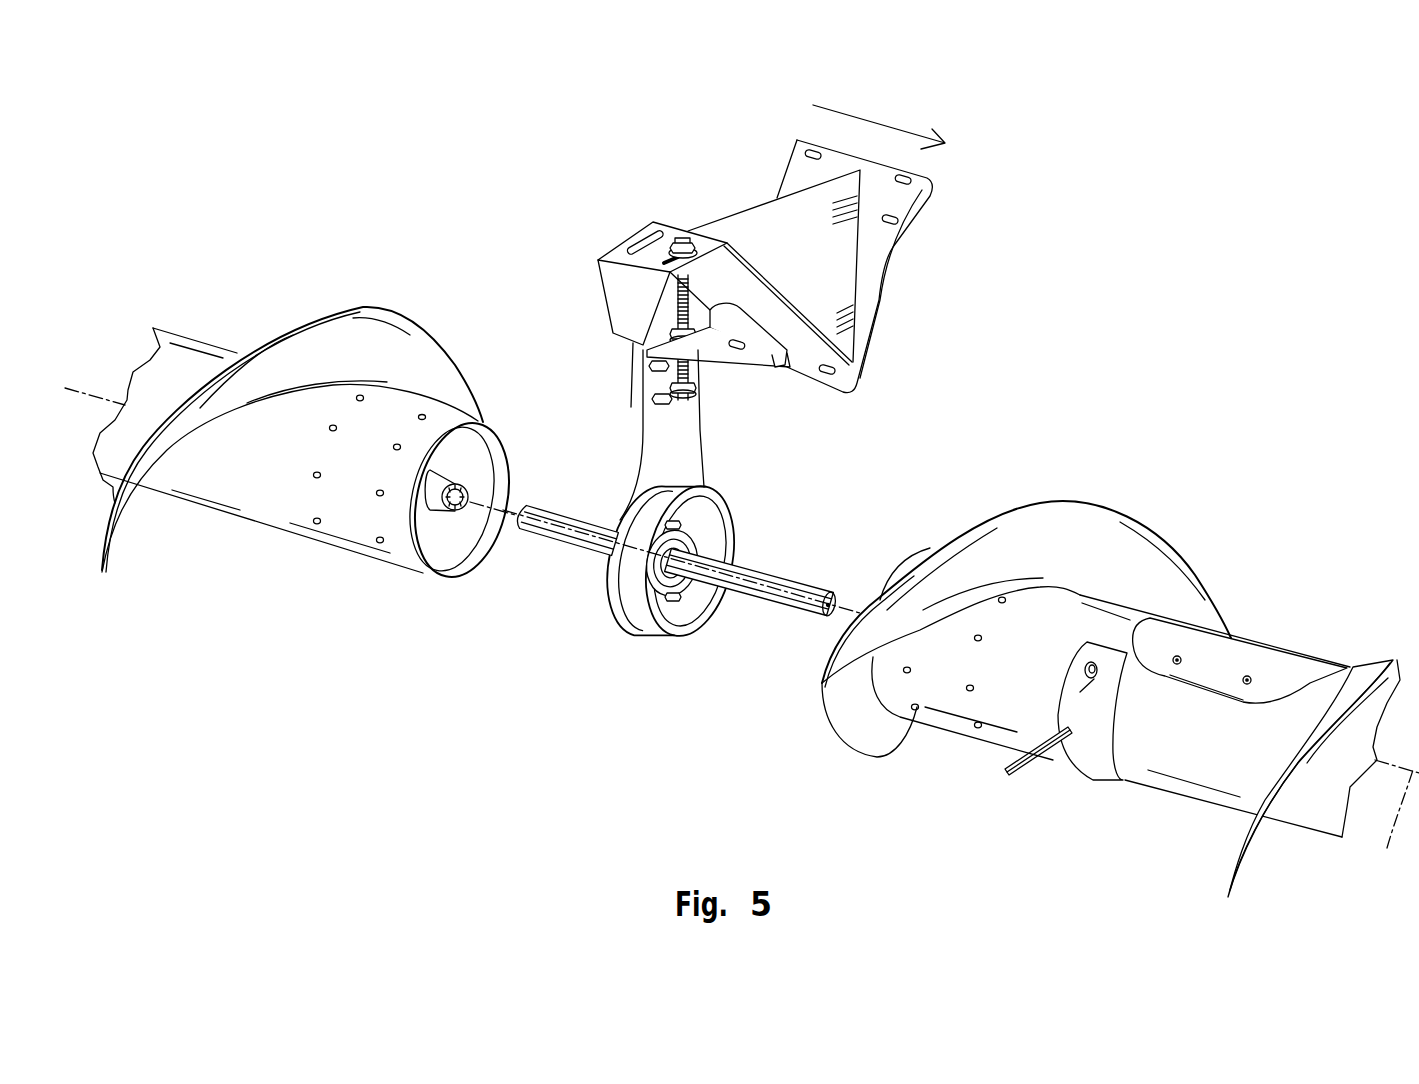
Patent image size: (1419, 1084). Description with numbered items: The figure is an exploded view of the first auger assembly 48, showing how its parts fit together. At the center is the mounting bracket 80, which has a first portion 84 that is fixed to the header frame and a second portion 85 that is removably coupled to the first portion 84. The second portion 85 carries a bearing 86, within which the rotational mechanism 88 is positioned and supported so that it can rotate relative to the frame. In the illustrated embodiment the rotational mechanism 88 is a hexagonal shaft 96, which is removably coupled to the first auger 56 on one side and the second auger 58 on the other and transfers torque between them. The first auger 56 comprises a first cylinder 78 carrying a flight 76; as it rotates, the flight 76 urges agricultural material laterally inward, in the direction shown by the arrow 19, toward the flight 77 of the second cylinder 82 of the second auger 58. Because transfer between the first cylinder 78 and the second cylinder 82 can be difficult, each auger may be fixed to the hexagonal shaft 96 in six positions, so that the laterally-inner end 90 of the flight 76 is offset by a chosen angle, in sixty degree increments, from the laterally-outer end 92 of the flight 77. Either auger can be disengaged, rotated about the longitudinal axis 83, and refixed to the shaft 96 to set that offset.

The arrow 19 is at (883, 122).
The first auger assembly 48 is at (1203, 253).
The first auger 56 is at (190, 334).
The second auger 58 is at (1346, 665).
The flight 76 is at (392, 317).
The flight 77 is at (1135, 525).
The first cylinder 78 is at (263, 507).
The mounting bracket 80 is at (923, 212).
The second cylinder 82 is at (1163, 768).
The longitudinal axis 83 is at (1393, 829).
The first portion 84 is at (752, 222).
The second portion 85 is at (680, 453).
The bearing 86 is at (660, 575).
The rotational mechanism 88 is at (760, 577).
The laterally-inner end 90 is at (472, 412).
The laterally-outer end 92 is at (838, 655).
The hexagonal shaft 96 is at (817, 588).